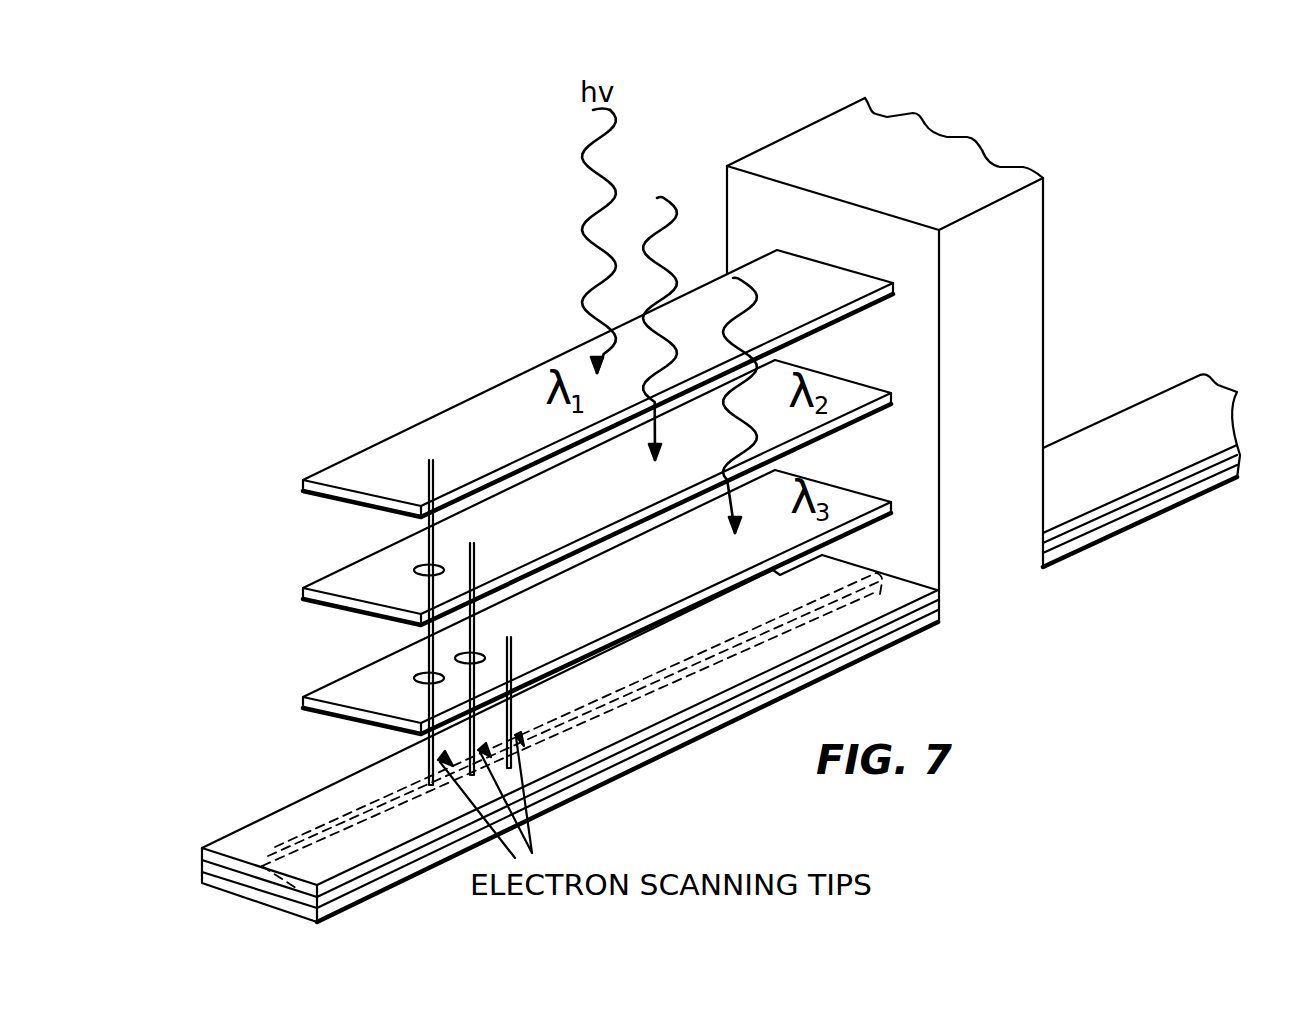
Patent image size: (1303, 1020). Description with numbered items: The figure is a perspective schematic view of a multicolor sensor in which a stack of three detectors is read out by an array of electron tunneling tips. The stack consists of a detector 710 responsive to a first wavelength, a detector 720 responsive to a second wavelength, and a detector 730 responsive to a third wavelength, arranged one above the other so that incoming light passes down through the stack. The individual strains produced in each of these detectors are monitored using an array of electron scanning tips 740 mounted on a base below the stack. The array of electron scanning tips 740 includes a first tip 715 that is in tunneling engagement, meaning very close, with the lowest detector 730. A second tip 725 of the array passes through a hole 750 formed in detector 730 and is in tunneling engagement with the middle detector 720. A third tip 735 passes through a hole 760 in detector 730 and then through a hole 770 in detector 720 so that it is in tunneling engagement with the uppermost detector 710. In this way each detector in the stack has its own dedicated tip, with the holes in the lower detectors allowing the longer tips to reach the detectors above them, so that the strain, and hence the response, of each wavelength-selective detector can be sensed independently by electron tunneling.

The detector 710 is at (397, 434).
The detector 720 is at (336, 570).
The detector 730 is at (336, 680).
The array of electron scanning tips 740 is at (363, 818).
The first tip 715 is at (509, 712).
The second tip 725 is at (472, 565).
The third tip 735 is at (428, 532).
The hole 750 is at (474, 652).
The hole 760 is at (414, 680).
The hole 770 is at (414, 572).